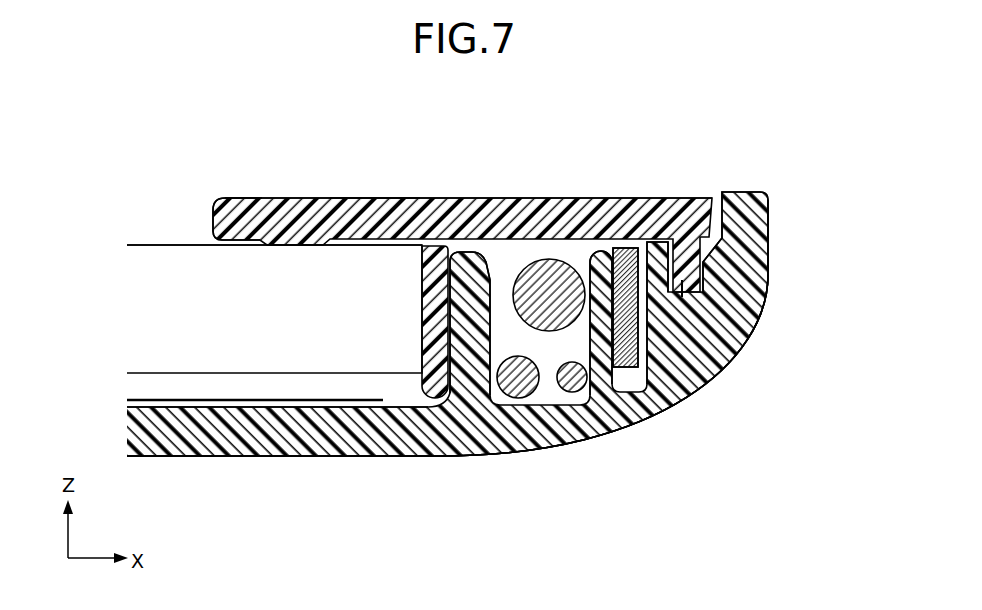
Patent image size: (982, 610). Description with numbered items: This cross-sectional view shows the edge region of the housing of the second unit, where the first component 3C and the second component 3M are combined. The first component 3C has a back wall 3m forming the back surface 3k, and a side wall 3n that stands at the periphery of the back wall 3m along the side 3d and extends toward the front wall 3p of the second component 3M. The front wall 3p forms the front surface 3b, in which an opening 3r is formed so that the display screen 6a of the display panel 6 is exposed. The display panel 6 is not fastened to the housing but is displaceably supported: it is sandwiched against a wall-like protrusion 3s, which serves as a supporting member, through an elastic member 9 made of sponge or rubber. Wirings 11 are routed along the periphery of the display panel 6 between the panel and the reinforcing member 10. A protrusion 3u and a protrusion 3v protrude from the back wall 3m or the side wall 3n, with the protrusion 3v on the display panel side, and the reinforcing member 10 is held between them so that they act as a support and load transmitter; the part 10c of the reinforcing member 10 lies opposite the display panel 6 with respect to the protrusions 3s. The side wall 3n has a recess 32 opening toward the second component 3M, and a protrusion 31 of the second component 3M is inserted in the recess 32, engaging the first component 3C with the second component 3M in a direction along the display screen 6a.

The display panel 6 is at (324, 390).
The display screen 6a is at (162, 245).
The opening 3r is at (213, 221).
The second component 3M is at (266, 188).
The front surface 3b is at (303, 203).
The front wall 3p is at (358, 215).
The elastic member 9 is at (436, 262).
The protrusion 3s is at (463, 267).
The wiring 11 is at (550, 270).
The protrusion 3v is at (600, 253).
The part 10c is at (626, 257).
The reinforcing member 10 is at (653, 237).
The protrusion 3u is at (657, 250).
The recess 32 is at (685, 293).
The side wall 3n is at (740, 308).
The side 3d is at (647, 328).
The protrusion 31 is at (722, 348).
The back surface 3k is at (163, 458).
The back wall 3m is at (220, 447).
The first component 3C is at (271, 470).